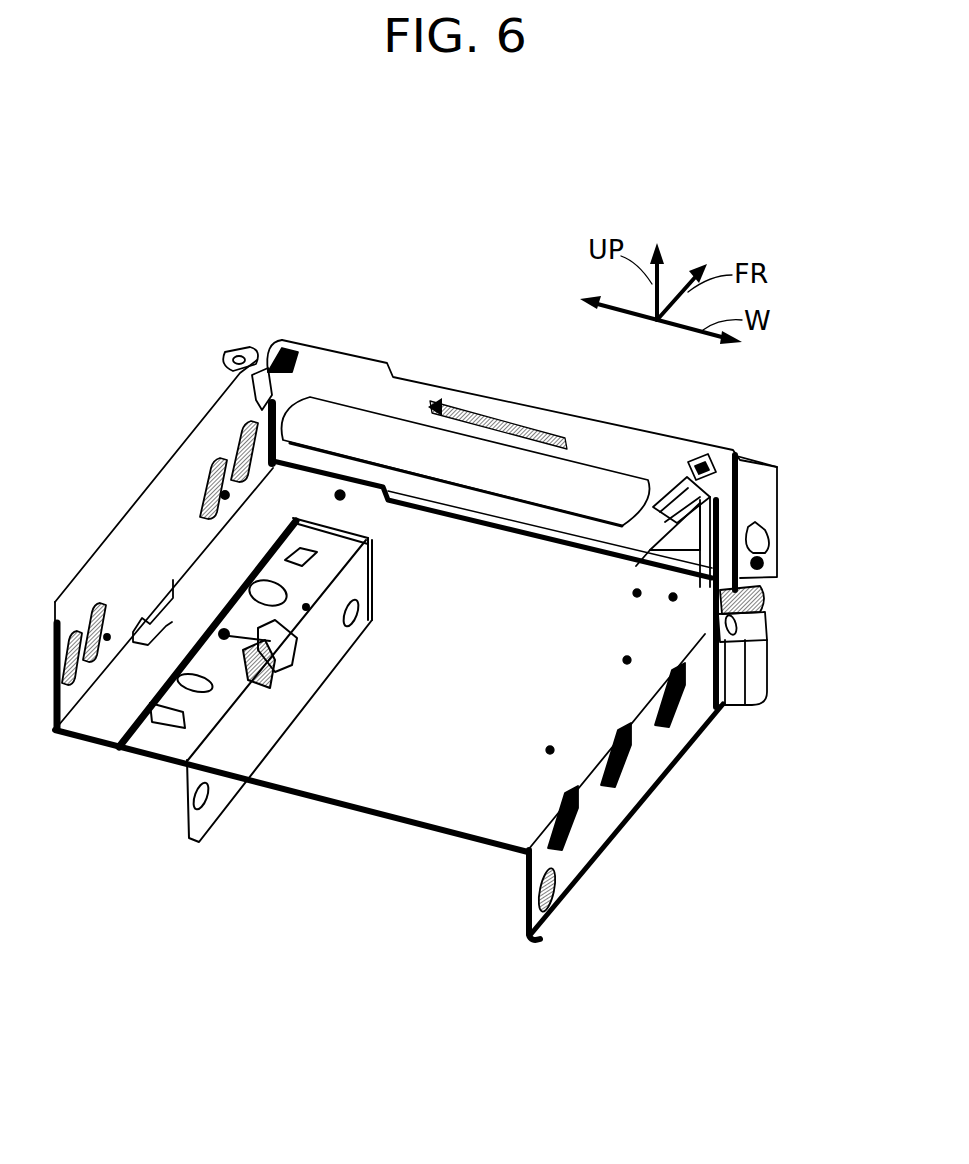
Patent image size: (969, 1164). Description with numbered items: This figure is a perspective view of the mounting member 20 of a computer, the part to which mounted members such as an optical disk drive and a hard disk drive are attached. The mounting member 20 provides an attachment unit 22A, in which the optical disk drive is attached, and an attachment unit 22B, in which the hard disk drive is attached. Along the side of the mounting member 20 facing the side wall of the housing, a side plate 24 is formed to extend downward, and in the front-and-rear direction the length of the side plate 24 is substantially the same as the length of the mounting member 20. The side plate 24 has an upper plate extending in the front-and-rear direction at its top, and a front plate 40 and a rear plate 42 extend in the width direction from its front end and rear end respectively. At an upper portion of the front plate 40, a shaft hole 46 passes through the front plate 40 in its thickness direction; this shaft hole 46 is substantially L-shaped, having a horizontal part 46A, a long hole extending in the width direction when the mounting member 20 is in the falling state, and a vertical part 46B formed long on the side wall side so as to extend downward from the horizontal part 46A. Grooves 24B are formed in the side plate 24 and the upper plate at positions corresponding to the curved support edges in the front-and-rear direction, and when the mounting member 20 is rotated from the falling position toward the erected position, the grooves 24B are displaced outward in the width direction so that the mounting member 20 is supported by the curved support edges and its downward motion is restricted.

The mounting member 20 is at (258, 266).
The attachment unit 22A is at (592, 495).
The attachment unit 22B is at (525, 580).
The side plate 24 is at (607, 828).
The grooves 24B is at (566, 845).
The front plate 40 is at (740, 705).
The rear plate 42 is at (542, 945).
The shaft hole 46 is at (857, 596).
The horizontal part 46A is at (768, 607).
The vertical part 46B is at (770, 640).